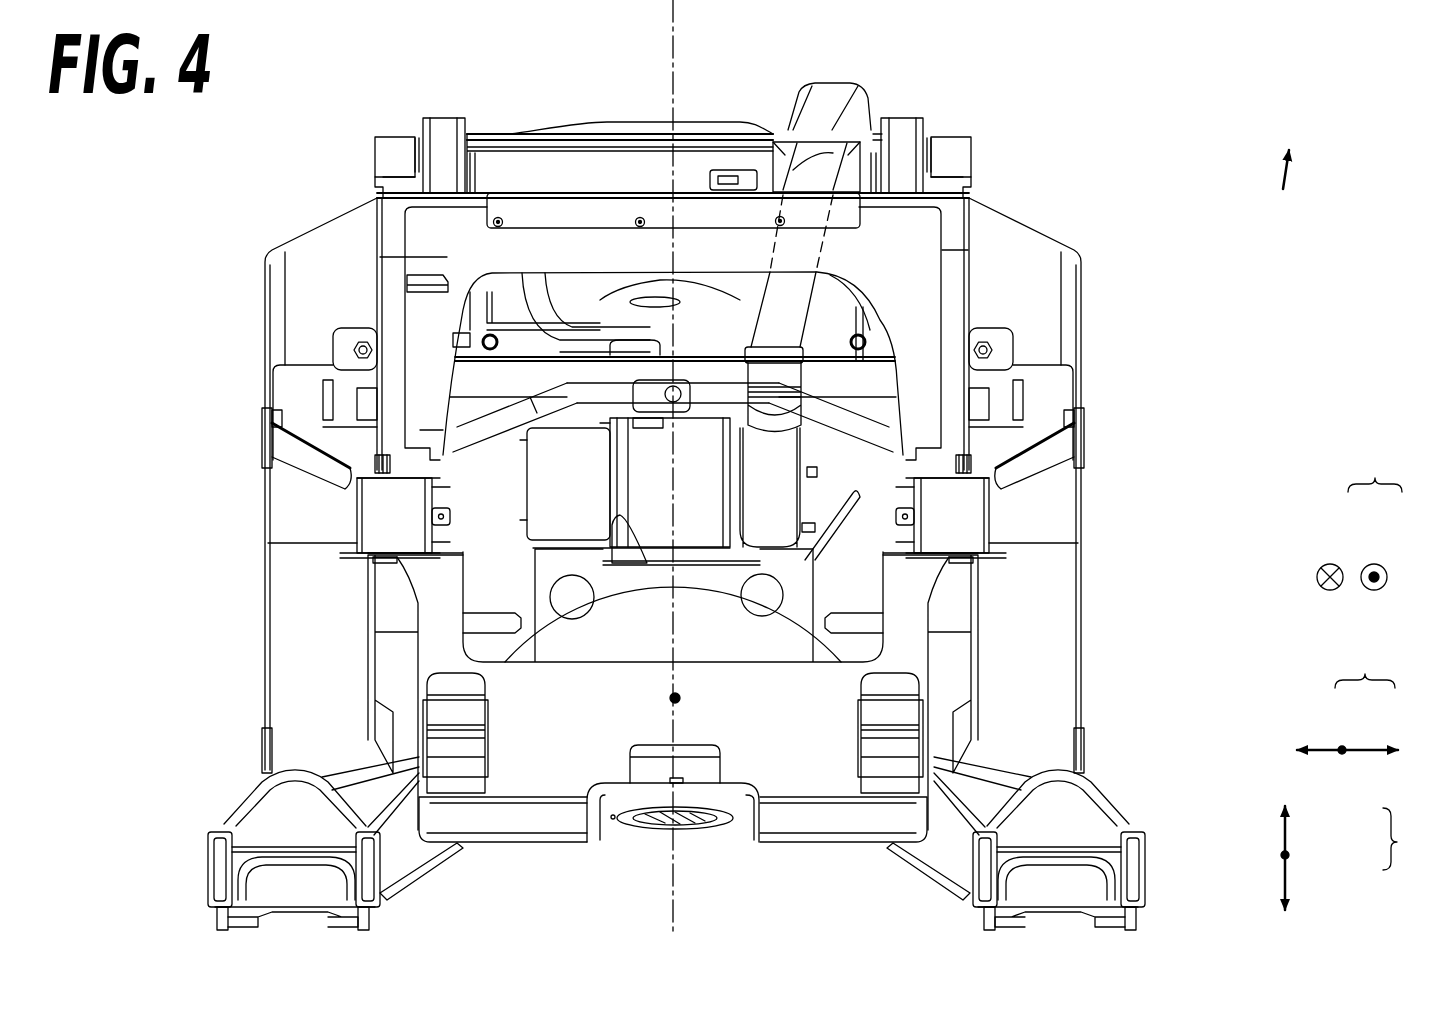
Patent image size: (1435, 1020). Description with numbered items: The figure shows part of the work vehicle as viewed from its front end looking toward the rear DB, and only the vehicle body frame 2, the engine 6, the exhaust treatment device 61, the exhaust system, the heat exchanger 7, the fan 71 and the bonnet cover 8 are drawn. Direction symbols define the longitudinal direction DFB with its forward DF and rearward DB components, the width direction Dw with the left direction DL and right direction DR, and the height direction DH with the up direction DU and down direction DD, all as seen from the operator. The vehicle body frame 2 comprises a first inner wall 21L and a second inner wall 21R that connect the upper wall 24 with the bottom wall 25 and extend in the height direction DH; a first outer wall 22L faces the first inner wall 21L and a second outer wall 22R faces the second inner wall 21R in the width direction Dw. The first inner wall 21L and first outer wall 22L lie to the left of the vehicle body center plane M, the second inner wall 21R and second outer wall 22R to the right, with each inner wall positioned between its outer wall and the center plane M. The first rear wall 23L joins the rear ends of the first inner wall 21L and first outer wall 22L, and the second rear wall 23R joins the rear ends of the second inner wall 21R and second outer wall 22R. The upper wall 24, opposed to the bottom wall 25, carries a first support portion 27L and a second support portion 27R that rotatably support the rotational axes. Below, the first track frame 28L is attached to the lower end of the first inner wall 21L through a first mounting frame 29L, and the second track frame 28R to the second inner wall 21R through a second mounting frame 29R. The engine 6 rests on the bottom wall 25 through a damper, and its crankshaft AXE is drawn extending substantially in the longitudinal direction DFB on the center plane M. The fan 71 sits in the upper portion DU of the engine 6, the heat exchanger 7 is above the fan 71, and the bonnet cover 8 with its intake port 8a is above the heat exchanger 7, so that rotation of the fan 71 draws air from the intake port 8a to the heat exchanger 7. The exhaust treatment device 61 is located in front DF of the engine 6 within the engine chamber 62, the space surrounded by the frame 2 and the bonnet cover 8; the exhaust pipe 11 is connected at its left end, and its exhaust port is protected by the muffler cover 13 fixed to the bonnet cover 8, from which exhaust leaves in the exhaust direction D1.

The vehicle body frame 2 is at (1087, 588).
The engine 6 is at (813, 583).
The heat exchanger 7 is at (530, 172).
The bonnet cover 8 is at (733, 123).
The intake port 8a is at (590, 122).
The exhaust pipe 11 is at (845, 333).
The muffler cover 13 is at (828, 98).
The first inner wall 21L is at (950, 450).
The second inner wall 21R is at (405, 292).
The first outer wall 22L is at (1085, 672).
The second outer wall 22R is at (265, 340).
The first rear wall 23L is at (1027, 703).
The second rear wall 23R is at (330, 240).
The upper wall 24 is at (447, 257).
The bottom wall 25 is at (577, 845).
The first support portion 27L is at (447, 133).
The second support portion 27R is at (905, 133).
The first track frame 28L is at (1145, 865).
The second track frame 28R is at (208, 865).
The first mounting frame 29L is at (930, 870).
The second mounting frame 29R is at (423, 870).
The exhaust treatment device 61 is at (520, 490).
The engine chamber 62 is at (520, 585).
The fan 71 is at (587, 285).
The vehicle body center plane M is at (700, 870).
The crankshaft AXE is at (687, 702).
The exhaust direction D1 is at (1292, 167).
The longitudinal direction DFB is at (1375, 470).
The rearward direction DB is at (1331, 563).
The forward direction DF is at (1374, 563).
The width direction Dw is at (1365, 667).
The right direction DR is at (1332, 748).
The left direction DL is at (1365, 748).
The height direction DH is at (1354, 858).
The up direction DU is at (1287, 834).
The down direction DD is at (1287, 880).